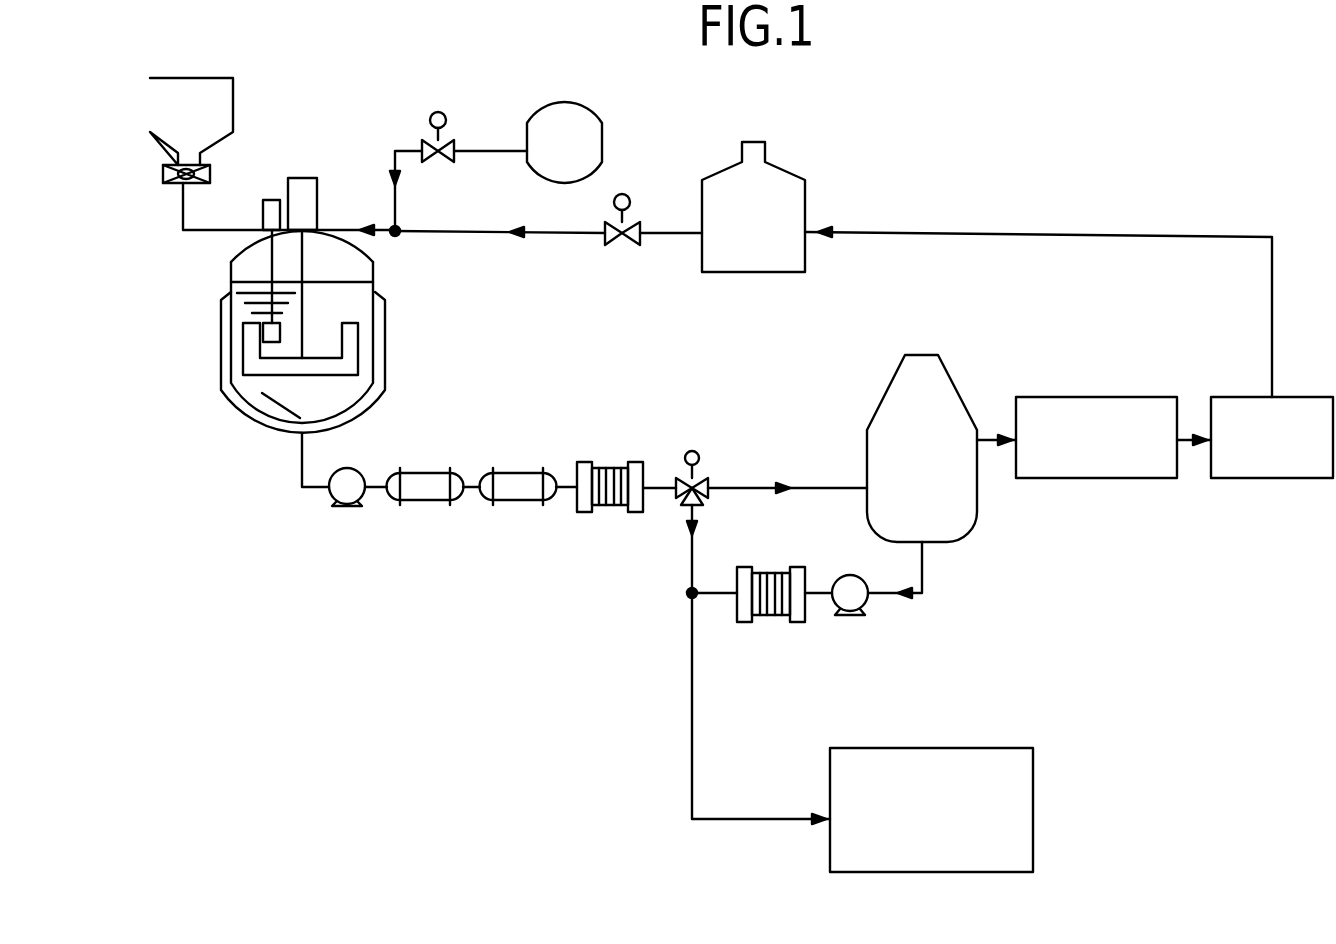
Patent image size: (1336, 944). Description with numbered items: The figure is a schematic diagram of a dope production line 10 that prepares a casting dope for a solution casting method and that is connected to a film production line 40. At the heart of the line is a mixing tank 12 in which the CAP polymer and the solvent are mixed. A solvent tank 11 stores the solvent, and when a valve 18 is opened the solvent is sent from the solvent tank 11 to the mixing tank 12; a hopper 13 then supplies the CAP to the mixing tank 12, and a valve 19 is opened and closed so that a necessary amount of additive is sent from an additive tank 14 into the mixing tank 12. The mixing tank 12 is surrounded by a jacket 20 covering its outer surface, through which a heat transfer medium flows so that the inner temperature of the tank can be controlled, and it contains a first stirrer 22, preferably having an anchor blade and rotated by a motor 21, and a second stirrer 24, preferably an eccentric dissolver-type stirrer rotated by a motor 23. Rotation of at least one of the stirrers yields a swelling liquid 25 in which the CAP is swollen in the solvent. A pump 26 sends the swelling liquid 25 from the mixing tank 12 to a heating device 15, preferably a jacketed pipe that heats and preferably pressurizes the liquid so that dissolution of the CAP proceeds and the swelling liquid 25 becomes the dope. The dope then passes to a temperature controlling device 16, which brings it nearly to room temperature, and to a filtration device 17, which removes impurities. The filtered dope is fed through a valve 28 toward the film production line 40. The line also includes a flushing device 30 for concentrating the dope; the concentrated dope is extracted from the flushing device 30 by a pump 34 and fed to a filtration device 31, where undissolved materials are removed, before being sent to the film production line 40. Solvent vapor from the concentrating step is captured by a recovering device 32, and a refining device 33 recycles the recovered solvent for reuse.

The dope production line 10 is at (1004, 193).
The solvent tank 11 is at (807, 202).
The mixing tank 12 is at (373, 275).
The hopper 13 is at (235, 105).
The additive tank 14 is at (604, 143).
The heating device 15 is at (422, 473).
The temperature controlling device 16 is at (515, 473).
The filtration device 17 is at (605, 462).
The valve 18 is at (603, 240).
The valve 19 is at (420, 149).
The jacket 20 is at (385, 370).
The motor 21 is at (304, 197).
The first stirrer 22 is at (352, 345).
The motor 23 is at (268, 202).
The second stirrer 24 is at (265, 325).
The swelling liquid 25 is at (262, 393).
The pump 26 is at (345, 505).
The valve 28 is at (705, 492).
The flushing device 30 is at (900, 403).
The filtration device 31 is at (772, 622).
The recovering device 32 is at (1088, 478).
The refining device 33 is at (1272, 478).
The pump 34 is at (853, 617).
The film production line 40 is at (1033, 815).